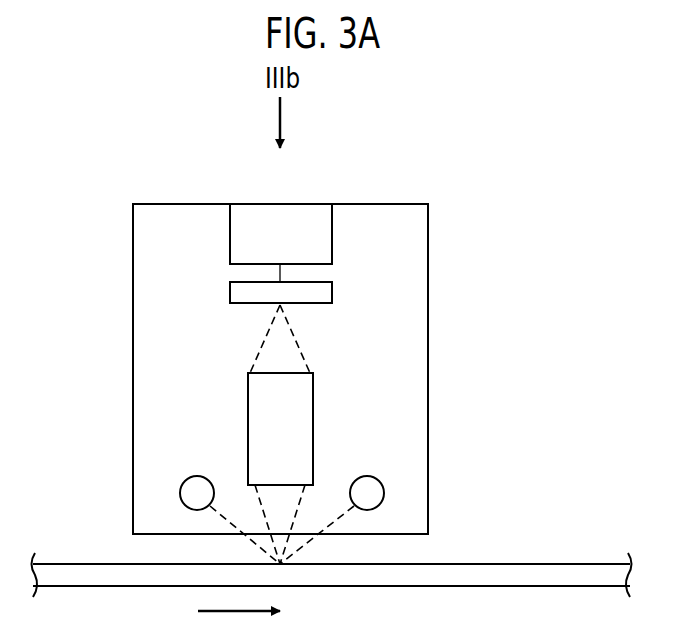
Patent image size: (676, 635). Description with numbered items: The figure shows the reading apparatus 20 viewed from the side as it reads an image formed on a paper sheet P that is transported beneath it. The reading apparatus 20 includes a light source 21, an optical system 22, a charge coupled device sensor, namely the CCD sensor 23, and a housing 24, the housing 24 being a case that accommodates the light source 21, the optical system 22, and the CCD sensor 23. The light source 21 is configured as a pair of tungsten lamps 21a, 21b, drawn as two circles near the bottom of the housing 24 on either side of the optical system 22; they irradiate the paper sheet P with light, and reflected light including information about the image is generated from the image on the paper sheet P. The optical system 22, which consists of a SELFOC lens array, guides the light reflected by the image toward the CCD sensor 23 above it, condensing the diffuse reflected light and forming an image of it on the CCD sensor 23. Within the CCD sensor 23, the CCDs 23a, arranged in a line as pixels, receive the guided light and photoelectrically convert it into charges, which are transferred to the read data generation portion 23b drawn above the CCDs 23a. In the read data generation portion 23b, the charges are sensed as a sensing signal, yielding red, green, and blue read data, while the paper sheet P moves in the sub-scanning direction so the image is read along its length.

The reading apparatus 20 is at (305, 330).
The light source 21 is at (285, 433).
The tungsten lamp 21a is at (180, 493).
The tungsten lamp 21b is at (384, 493).
The optical system 22 is at (313, 415).
The CCD sensor 23 is at (384, 258).
The CCDs 23a is at (332, 292).
The read data generation portion 23b is at (332, 236).
The housing 24 is at (429, 355).
The paper sheet P is at (62, 563).